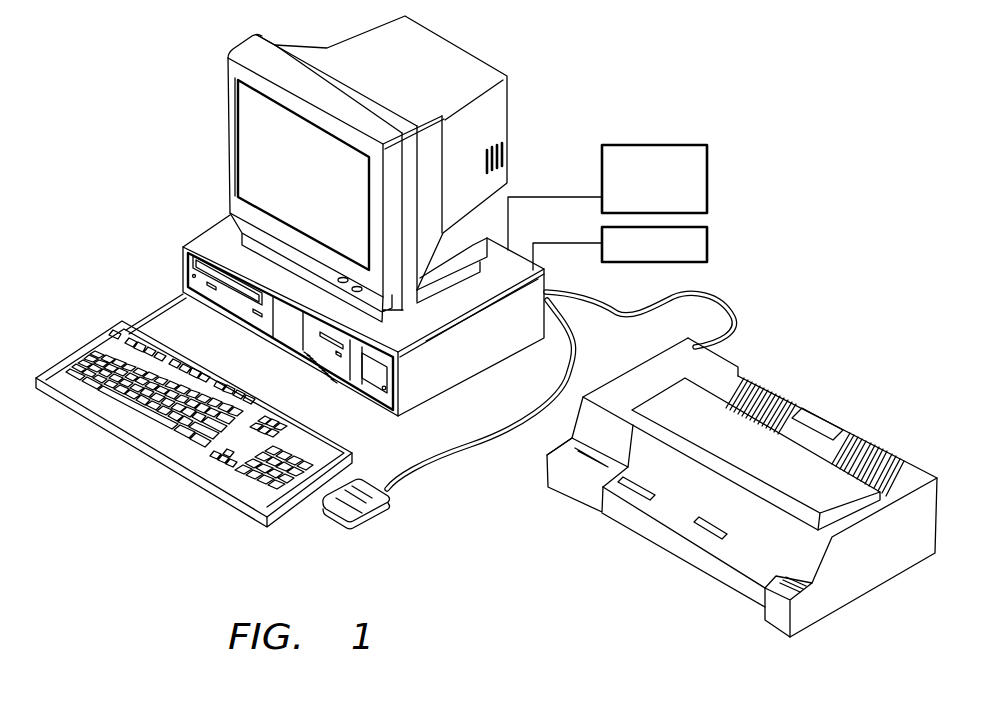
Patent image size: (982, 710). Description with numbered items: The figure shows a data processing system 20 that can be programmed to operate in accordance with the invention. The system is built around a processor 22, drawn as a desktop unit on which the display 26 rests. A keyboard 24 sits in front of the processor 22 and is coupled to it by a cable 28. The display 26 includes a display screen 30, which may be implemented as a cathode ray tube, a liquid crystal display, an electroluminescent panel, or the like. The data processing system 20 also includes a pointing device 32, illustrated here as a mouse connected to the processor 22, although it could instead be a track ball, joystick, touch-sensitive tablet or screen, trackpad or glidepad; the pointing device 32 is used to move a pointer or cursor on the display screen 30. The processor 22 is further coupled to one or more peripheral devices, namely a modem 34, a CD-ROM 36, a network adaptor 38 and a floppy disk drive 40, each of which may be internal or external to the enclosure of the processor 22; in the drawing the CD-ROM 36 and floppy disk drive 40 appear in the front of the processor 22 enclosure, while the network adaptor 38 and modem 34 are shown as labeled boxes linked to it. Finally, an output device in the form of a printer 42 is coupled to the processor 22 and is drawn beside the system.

The data processing system 20 is at (717, 58).
The processor 22 is at (204, 218).
The keyboard 24 is at (117, 447).
The display 26 is at (200, 73).
The cable 28 is at (165, 312).
The display screen 30 is at (240, 107).
The pointing device 32 is at (368, 513).
The modem 34 is at (708, 243).
The CD-ROM 36 is at (197, 265).
The network adaptor 38 is at (708, 180).
The floppy disk drive 40 is at (322, 340).
The printer 42 is at (847, 378).